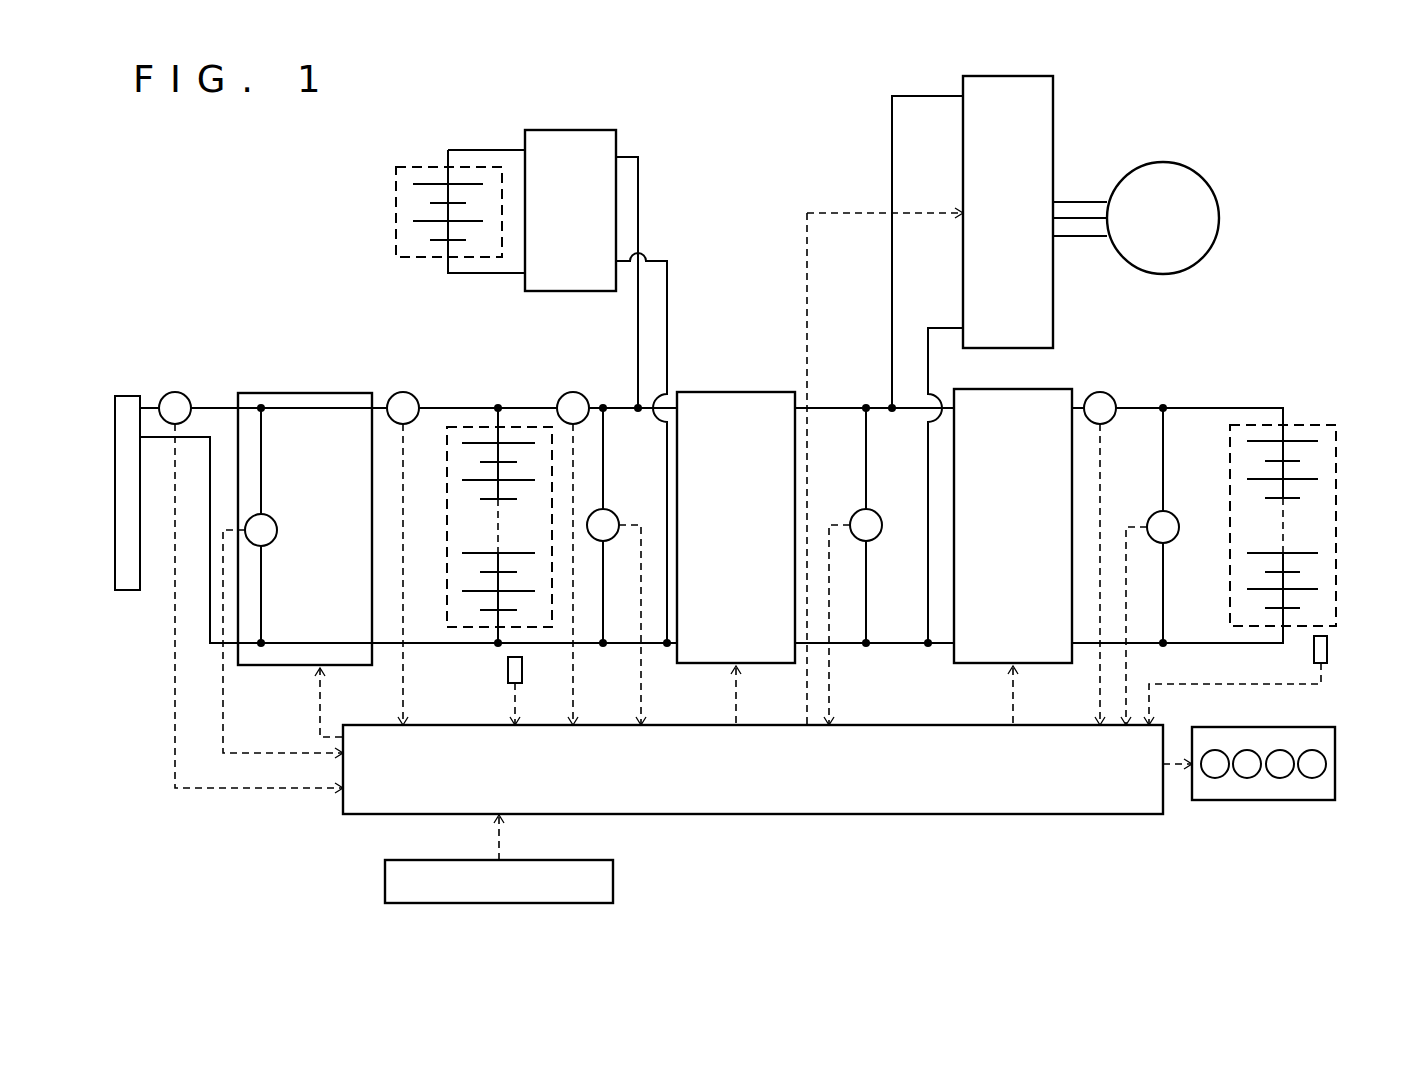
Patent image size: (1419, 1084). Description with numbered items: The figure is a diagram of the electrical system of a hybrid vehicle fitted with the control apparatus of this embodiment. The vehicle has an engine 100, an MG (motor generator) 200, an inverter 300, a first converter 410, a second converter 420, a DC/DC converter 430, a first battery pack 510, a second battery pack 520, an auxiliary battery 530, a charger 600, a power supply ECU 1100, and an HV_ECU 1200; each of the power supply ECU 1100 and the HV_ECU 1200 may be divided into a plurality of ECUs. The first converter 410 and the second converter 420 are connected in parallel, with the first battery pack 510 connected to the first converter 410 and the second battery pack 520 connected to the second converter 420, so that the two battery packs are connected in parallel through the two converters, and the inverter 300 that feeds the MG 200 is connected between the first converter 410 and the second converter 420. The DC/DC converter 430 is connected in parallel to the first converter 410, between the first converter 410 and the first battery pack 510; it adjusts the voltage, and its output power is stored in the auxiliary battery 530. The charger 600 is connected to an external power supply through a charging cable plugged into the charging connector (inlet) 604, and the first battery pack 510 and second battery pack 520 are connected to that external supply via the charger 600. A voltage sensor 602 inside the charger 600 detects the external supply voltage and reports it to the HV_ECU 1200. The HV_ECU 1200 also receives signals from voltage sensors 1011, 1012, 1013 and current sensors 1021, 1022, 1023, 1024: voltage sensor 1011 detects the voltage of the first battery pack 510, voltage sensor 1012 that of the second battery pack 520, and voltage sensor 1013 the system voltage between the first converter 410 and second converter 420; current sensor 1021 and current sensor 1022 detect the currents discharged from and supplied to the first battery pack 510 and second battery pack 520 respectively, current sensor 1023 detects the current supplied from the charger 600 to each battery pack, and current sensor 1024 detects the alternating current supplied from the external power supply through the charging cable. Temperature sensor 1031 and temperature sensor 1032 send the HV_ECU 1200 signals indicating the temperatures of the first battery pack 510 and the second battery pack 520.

The engine 100 is at (1335, 757).
The MG (Motor Generator) 200 is at (1212, 182).
The inverter 300 is at (1053, 108).
The first converter 410 is at (716, 664).
The second converter 420 is at (1027, 664).
The DC/DC converter 430 is at (570, 130).
The first battery pack 510 is at (528, 426).
The second battery pack 520 is at (1336, 520).
The auxiliary battery 530 is at (442, 166).
The charger 600 is at (323, 392).
The voltage sensor 602 is at (273, 516).
The charging connector (inlet) 604 is at (133, 394).
The voltage sensor 1011 is at (618, 510).
The voltage sensor 1012 is at (1175, 511).
The voltage sensor 1013 is at (878, 509).
The current sensor 1021 is at (580, 394).
The current sensor 1022 is at (1117, 398).
The current sensor 1023 is at (402, 394).
The current sensor 1024 is at (186, 396).
The temperature sensor 1031 is at (507, 666).
The temperature sensor 1032 is at (1327, 645).
The power supply ECU 1100 is at (613, 878).
The HV_ECU 1200 is at (742, 814).